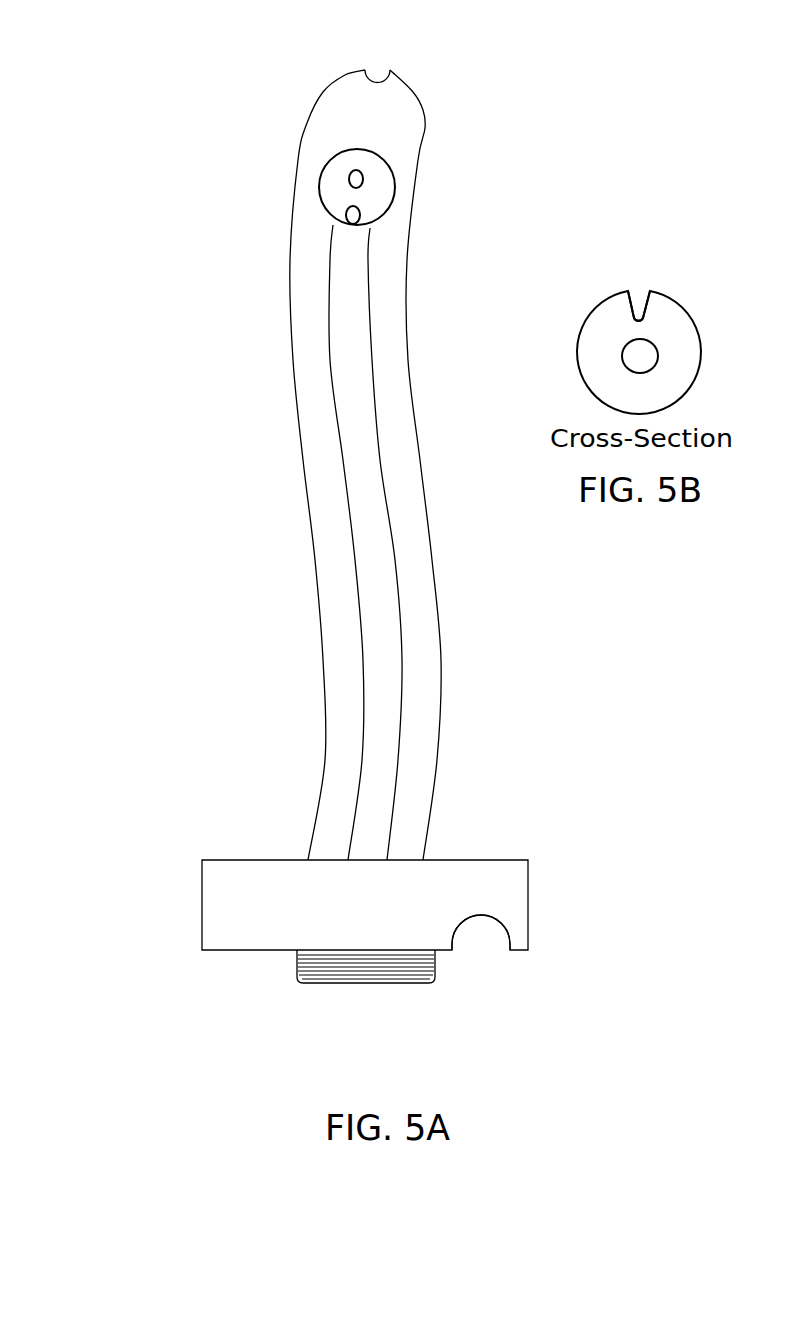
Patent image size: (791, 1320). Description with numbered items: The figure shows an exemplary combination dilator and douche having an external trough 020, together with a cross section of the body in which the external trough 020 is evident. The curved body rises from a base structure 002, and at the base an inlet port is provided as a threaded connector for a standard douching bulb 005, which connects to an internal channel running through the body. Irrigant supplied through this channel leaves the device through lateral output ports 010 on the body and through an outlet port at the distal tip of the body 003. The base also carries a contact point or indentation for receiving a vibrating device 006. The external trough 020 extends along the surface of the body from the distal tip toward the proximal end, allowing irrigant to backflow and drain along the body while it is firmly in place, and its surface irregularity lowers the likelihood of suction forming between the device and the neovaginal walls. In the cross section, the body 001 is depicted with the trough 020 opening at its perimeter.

In FIG. 5B, the body of gripping member 001 is at (594, 352).
In FIG. 5A, the base structure 002 is at (202, 860).
In FIG. 5A, the outlet port at the distal tip of the body 003 is at (439, 55).
In FIG. 5A, the threaded connector for a standard douching bulb 005 is at (332, 992).
In FIG. 5A, the contact point or indentation for receiving a vibrating device 006 is at (470, 920).
In FIG. 5A, the lateral output ports 010 is at (421, 181).
In FIG. 5A, the external trough 020 is at (421, 542).
In FIG. 5B, the external trough 020 is at (673, 283).